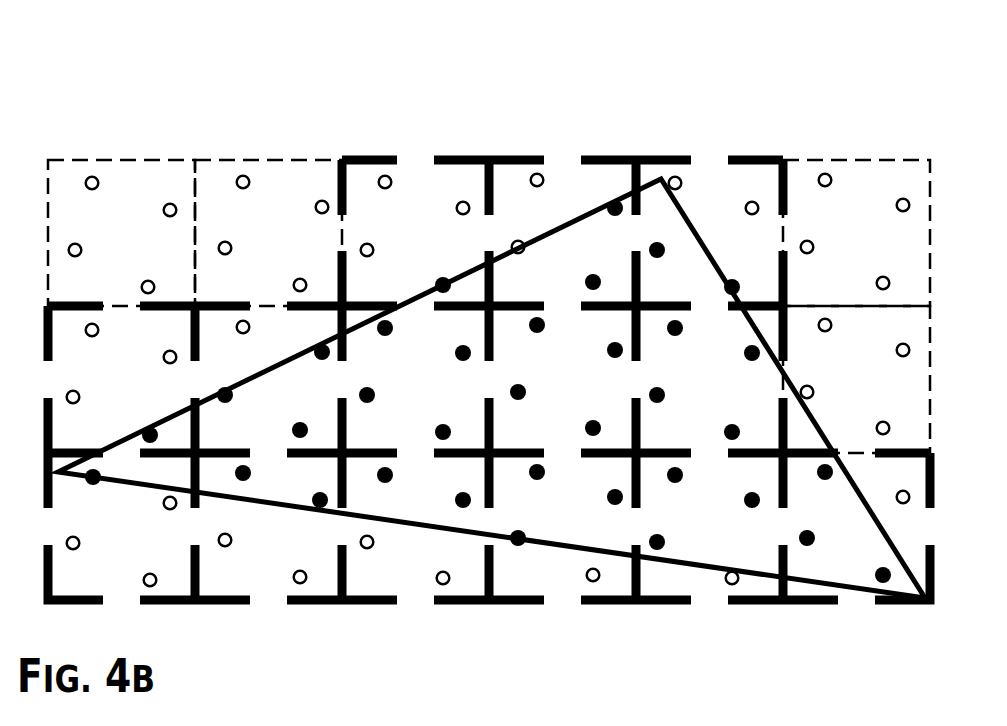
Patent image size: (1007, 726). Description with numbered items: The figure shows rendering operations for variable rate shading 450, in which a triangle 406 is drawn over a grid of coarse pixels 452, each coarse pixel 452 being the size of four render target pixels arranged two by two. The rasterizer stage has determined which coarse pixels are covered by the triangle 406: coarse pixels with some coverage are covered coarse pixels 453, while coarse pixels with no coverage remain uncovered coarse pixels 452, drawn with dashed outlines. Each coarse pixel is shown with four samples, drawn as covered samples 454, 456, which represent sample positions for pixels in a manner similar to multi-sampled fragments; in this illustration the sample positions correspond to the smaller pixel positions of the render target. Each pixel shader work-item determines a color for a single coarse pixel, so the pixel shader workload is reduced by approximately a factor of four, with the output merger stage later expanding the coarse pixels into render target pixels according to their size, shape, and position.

The sensor pixel array sampling pattern 450 is at (489, 301).
The coarse pixel 452 is at (168, 158).
The covered coarse pixel 453 is at (412, 157).
The covered sample 454 is at (385, 175).
The covered sample 456 is at (612, 199).
The triangle 406 is at (700, 228).